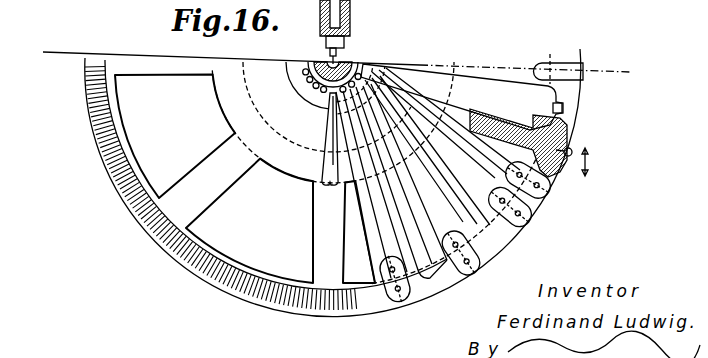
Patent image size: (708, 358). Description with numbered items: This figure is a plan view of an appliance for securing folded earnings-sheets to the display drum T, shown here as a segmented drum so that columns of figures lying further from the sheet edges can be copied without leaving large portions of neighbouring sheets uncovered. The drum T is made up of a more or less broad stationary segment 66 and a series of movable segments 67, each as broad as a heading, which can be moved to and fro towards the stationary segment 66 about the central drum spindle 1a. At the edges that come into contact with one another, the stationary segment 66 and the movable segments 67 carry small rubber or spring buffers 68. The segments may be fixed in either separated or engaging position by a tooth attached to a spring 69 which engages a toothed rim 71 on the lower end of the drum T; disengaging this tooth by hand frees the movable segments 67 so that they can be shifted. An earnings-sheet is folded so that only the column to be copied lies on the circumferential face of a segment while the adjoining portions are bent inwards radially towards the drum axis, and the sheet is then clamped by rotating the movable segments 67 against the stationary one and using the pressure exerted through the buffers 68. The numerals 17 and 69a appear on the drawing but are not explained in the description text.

The drum spindle 1a is at (328, 58).
The pivot pin ring 17 is at (247, 98).
The drum T is at (175, 136).
The stationary segment 66 is at (503, 70).
The movable segments 67 is at (497, 124).
The buffers 68 is at (566, 109).
The spring 69 is at (460, 217).
The lever arm 69a is at (448, 151).
The toothed rim 71 is at (202, 256).